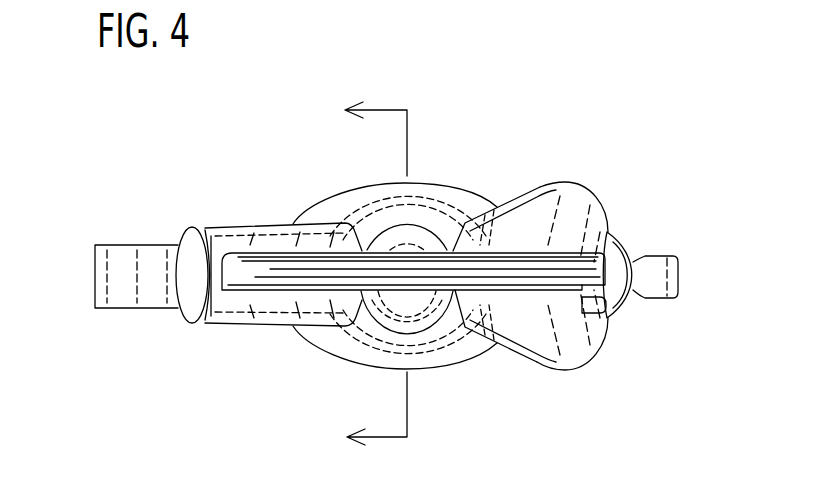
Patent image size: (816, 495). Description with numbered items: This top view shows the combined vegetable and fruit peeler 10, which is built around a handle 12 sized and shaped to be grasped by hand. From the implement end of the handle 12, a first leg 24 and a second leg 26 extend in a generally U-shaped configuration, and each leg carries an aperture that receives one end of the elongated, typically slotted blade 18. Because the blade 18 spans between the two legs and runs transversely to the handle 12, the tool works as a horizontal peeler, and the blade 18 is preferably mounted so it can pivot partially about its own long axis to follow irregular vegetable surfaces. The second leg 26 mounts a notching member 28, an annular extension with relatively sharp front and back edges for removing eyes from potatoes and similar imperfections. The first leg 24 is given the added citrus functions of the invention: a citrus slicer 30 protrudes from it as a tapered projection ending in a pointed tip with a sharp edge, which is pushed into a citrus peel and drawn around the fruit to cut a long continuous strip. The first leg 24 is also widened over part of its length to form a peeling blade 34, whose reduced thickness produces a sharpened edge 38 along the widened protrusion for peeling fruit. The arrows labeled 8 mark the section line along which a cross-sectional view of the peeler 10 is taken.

The combined vegetable and fruit peeler 10 is at (640, 86).
The section line for FIG. 8 is at (364, 277).
The handle 12 is at (340, 198).
The blade 18 is at (277, 265).
The first leg 24 is at (602, 347).
The second leg 26 is at (228, 327).
The notching member 28 is at (93, 272).
The citrus slicer 30 is at (678, 273).
The peeling blade 34 is at (572, 210).
The sharpened edge 38 is at (578, 183).